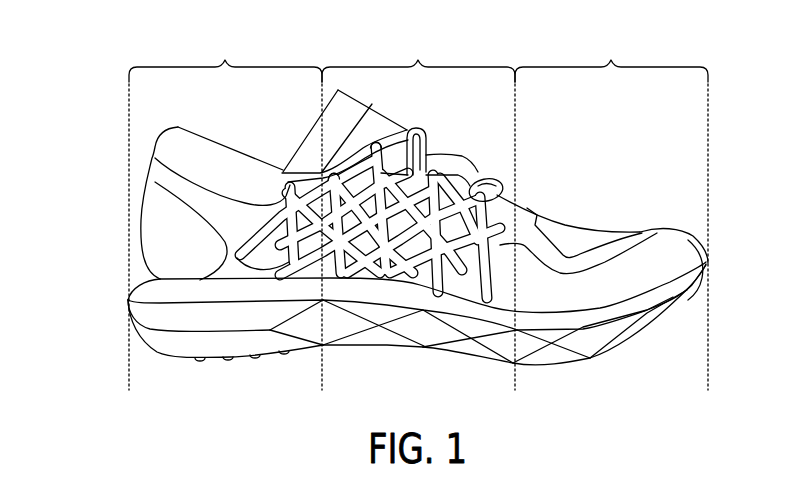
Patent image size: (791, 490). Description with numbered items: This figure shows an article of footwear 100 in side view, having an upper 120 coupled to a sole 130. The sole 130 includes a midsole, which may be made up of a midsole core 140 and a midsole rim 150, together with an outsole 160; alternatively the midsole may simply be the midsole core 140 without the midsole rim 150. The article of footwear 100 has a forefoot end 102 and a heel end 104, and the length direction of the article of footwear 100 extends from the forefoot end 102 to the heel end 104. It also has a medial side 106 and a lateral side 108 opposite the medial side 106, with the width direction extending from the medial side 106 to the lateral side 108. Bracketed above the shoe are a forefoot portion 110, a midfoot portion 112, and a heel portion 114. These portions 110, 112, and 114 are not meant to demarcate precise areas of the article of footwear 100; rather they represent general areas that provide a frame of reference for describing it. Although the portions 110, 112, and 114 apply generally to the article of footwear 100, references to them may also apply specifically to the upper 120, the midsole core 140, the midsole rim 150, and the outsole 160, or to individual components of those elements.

The article of footwear 100 is at (118, 61).
The forefoot end 102 is at (690, 258).
The heel end 104 is at (158, 230).
The medial side 106 is at (460, 270).
The lateral side 108 is at (482, 176).
The forefoot portion 110 is at (611, 208).
The midfoot portion 112 is at (418, 208).
The heel portion 114 is at (225, 208).
The upper 120 is at (653, 250).
The sole 130 is at (121, 316).
The midsole core 140 is at (647, 318).
The midsole rim 150 is at (387, 305).
The outsole 160 is at (235, 357).